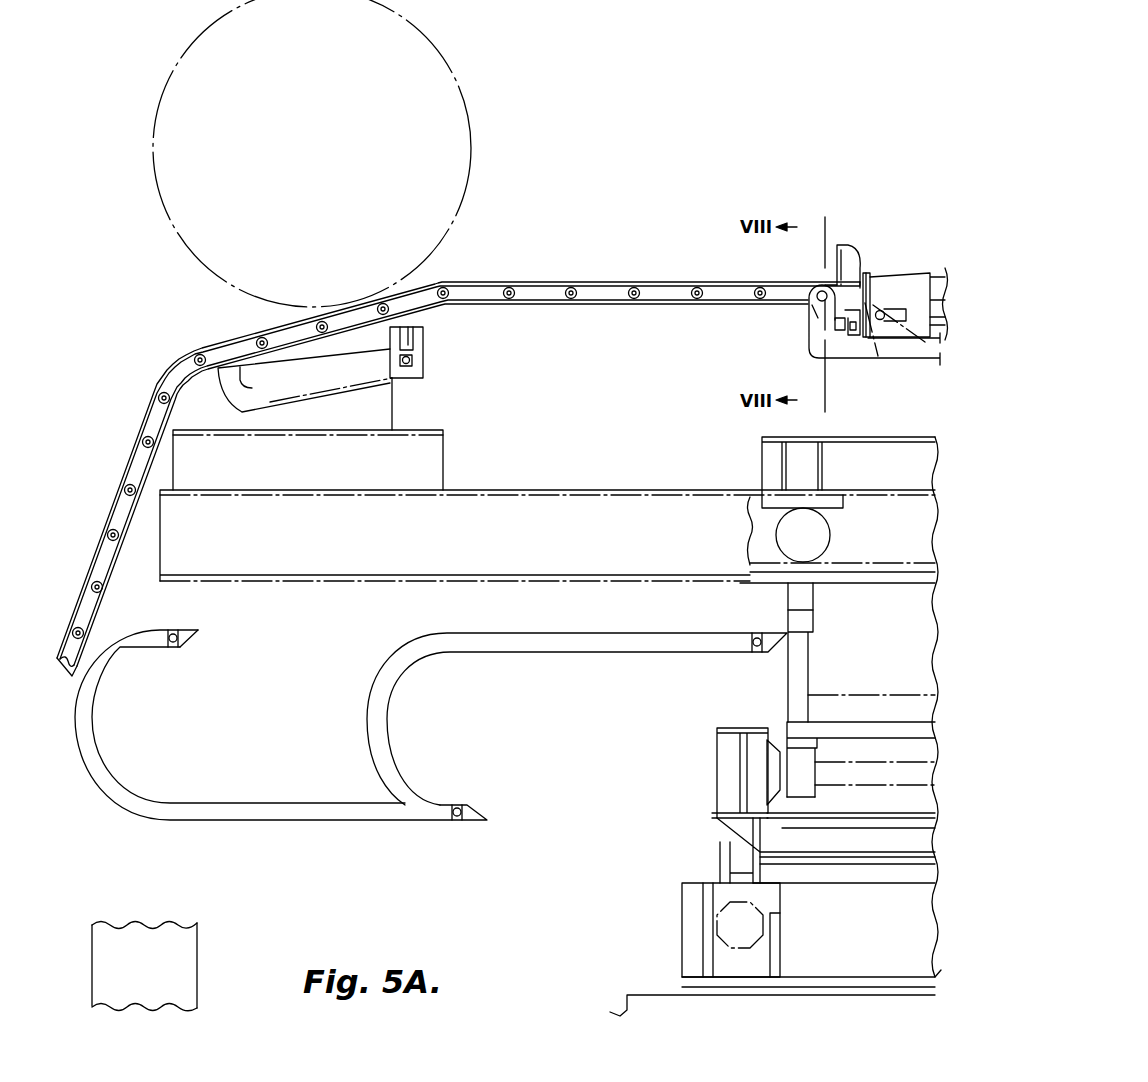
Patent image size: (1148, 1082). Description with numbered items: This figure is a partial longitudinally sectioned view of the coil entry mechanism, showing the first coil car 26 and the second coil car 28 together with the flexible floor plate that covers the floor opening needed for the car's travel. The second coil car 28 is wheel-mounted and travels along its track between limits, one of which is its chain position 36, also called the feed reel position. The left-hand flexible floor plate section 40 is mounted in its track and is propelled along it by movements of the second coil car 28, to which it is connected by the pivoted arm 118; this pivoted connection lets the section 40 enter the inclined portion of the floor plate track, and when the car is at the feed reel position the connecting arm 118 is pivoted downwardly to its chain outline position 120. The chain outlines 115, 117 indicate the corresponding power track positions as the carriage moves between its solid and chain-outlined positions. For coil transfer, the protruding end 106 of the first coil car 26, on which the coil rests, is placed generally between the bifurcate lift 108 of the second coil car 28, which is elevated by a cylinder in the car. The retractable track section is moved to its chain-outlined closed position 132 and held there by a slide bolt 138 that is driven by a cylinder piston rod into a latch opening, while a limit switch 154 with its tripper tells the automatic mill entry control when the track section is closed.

The first coil car 26 is at (825, 258).
The second coil car 28 is at (822, 676).
The chain position 36 is at (395, 400).
The left-hand flexible floor plate section 40 is at (474, 290).
The protruding end 106 is at (877, 272).
The bifurcate lift 108 is at (851, 262).
The chain outline of power track position 115 is at (387, 722).
The chain outline of power track position 117 is at (95, 718).
The pivoted arm 118 is at (818, 345).
The chain outline position of connecting arm 120 is at (328, 390).
The chain-outlined closed position 132 is at (878, 356).
The slide bolt 138 is at (902, 307).
The limit switch 154 is at (808, 318).